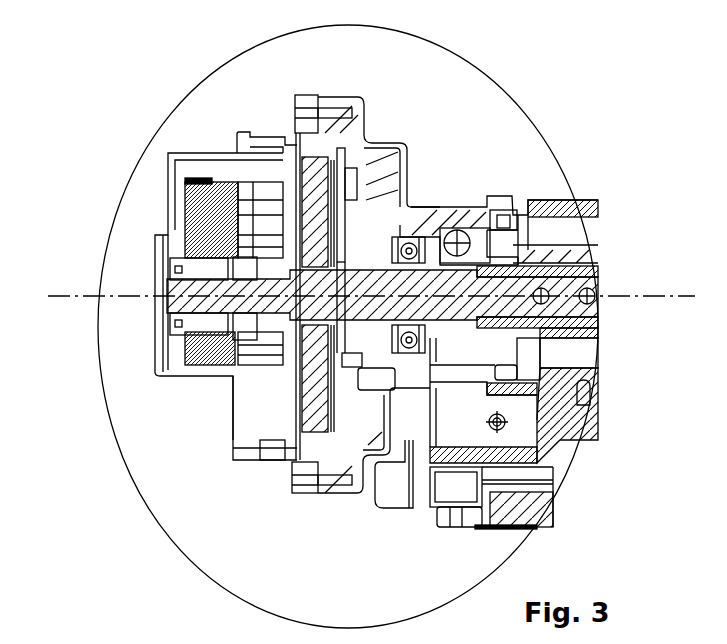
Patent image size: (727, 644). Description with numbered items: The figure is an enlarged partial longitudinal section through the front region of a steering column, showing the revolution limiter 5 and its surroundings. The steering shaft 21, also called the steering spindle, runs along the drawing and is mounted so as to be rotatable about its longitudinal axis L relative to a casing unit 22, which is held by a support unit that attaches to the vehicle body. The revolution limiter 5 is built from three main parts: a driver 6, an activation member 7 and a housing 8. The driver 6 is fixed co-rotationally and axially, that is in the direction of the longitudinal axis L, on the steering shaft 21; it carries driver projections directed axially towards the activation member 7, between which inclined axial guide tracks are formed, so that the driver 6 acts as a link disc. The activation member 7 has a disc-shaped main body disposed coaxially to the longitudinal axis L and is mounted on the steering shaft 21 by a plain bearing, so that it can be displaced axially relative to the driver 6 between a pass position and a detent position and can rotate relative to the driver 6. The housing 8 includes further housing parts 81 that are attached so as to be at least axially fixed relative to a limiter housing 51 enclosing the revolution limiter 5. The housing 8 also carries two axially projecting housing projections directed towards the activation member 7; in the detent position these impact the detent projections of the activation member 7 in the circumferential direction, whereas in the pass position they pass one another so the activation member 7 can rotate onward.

The revolution limiter 5 is at (211, 105).
The limiter housing 51 is at (376, 170).
The driver 6 is at (403, 203).
The activation member 7 is at (345, 142).
The housing 8 is at (392, 218).
The further housing parts 81 is at (290, 107).
The steering shaft 21 is at (411, 287).
The casing unit 22 is at (556, 198).
The longitudinal axis L is at (63, 297).